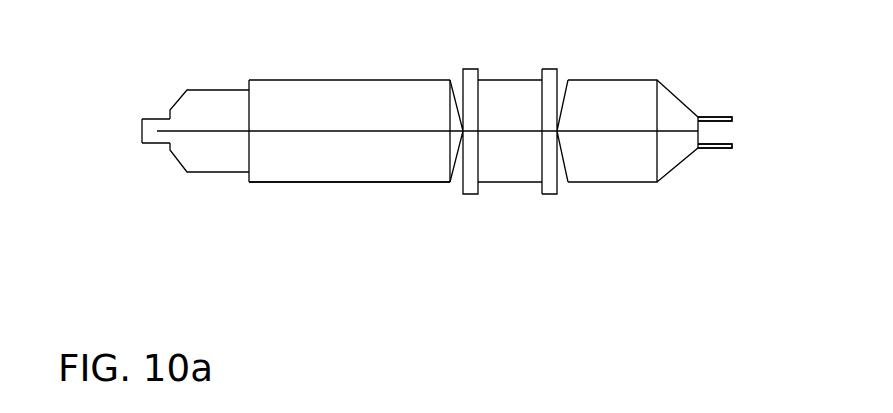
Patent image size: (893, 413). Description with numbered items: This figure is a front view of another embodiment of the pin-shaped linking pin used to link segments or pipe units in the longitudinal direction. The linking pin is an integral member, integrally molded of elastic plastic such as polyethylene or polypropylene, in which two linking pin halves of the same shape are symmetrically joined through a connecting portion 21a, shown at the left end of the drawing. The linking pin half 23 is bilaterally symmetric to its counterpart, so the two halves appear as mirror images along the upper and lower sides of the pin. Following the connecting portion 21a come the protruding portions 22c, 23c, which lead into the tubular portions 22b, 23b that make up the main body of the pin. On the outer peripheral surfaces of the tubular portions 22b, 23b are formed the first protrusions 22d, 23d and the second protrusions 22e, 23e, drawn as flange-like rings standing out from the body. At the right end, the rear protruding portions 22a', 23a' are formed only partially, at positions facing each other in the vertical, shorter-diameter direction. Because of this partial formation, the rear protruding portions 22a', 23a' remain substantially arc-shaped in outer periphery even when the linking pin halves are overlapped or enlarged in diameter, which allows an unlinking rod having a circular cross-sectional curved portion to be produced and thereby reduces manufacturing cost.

The connecting portion 21a is at (142, 131).
The protruding portion 22c is at (200, 90).
The protruding portion 23c is at (223, 172).
The tubular portion 22b is at (347, 80).
The tubular portion 23b is at (357, 182).
The first protrusion 22d is at (467, 69).
The first protrusion 23d is at (475, 194).
The second protrusion 22e is at (549, 69).
The second protrusion 23e is at (548, 194).
The rear protruding portion 22a' is at (707, 91).
The rear protruding portion 23a' is at (716, 172).
The linking pin half 23 is at (421, 230).